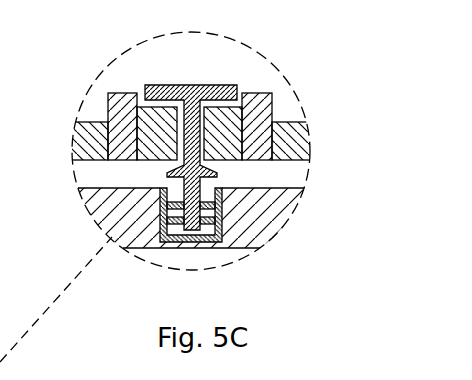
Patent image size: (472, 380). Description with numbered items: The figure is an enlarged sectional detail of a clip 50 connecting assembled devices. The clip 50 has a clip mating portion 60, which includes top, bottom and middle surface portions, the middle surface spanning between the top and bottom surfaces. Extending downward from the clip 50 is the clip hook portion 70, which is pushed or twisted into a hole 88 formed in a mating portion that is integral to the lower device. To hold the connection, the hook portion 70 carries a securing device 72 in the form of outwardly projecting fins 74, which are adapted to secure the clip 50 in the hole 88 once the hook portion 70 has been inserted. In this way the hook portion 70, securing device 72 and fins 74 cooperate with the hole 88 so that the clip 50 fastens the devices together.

The clip 50 is at (144, 121).
The clip hook portion 70 is at (155, 85).
The clip mating portion 60 is at (237, 208).
The securing device 72 is at (146, 252).
The outwardly projecting fins 74 is at (168, 247).
The hole 88 is at (212, 215).